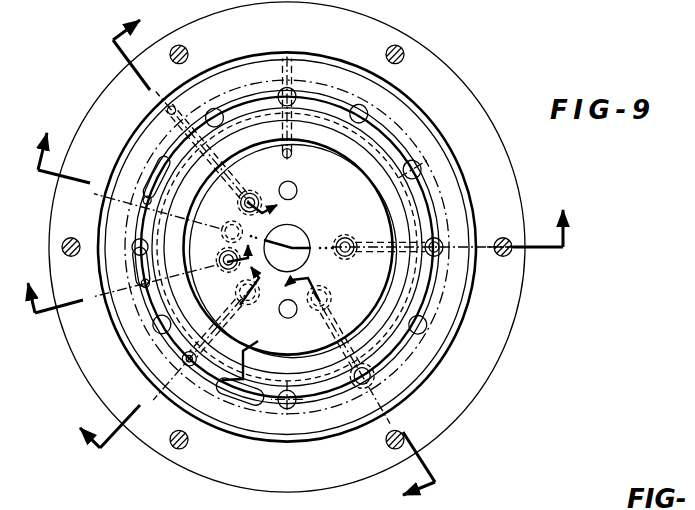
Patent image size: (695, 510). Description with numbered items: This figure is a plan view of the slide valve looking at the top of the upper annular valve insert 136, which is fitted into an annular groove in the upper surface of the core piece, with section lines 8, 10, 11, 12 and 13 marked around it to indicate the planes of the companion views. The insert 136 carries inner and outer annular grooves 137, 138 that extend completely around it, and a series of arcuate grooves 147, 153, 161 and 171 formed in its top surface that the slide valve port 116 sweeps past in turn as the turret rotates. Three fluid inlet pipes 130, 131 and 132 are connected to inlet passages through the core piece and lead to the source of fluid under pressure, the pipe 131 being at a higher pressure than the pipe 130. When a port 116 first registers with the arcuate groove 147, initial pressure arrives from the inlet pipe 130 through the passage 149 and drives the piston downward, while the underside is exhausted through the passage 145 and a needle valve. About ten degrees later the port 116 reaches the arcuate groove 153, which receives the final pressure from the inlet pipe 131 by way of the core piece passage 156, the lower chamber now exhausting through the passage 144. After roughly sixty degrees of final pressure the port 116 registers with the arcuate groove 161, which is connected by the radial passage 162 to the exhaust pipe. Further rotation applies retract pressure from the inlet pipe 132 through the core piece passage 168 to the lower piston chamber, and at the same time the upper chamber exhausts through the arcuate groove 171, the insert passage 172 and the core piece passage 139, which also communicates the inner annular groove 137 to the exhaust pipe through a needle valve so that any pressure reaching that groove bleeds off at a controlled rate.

The section line 8- 8 is at (305, 182).
The section line 10- 10 is at (129, 48).
The section line 11- 11 is at (111, 288).
The section line 12- 12 is at (98, 426).
The section line 13- 13 is at (431, 468).
The slide valve port 116 is at (287, 256).
The fluid inlet pipe 130 is at (168, 214).
The fluid inlet pipe 131 is at (205, 342).
The fluid inlet pipe 132 is at (323, 295).
The annular valve insert 136 is at (287, 258).
The inner annular groove 137 is at (287, 246).
The outer annular groove 138 is at (287, 244).
The core piece passage 139 is at (422, 237).
The passage 144 is at (217, 255).
The passage 145 is at (255, 190).
The arcuate groove 147 is at (135, 167).
The passage 149 is at (204, 149).
The arcuate groove 153 is at (107, 264).
The core piece passage 156 is at (233, 288).
The arcuate groove 161 is at (259, 419).
The radial passage 162 is at (254, 370).
The core piece passage 168 is at (351, 357).
The arcuate groove 171 is at (311, 247).
The insert passage 172 is at (463, 227).